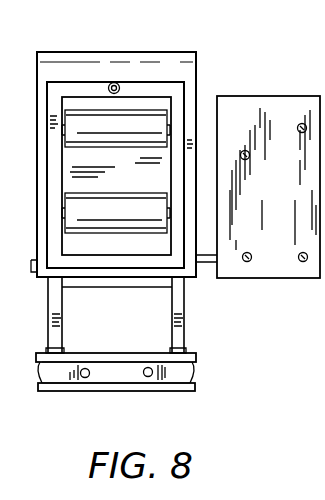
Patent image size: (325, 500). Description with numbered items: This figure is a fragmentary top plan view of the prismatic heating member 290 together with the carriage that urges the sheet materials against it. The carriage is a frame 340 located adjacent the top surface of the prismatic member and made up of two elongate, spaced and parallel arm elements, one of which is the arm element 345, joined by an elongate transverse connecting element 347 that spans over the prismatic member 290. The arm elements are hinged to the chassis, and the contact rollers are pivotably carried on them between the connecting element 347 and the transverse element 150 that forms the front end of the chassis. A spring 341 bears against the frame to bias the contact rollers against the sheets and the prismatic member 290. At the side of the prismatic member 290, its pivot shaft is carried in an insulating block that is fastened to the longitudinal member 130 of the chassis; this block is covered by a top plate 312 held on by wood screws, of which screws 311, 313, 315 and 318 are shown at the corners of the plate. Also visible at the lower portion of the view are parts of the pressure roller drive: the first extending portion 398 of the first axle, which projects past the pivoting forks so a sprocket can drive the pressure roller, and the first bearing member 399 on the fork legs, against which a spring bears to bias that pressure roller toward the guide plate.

The frame 340 is at (44, 320).
The spring 341 is at (109, 85).
The transverse connecting element 347 is at (143, 92).
The prismatic heating member 290 is at (60, 182).
The arm element 345 is at (47, 270).
The first extending portion 398 is at (52, 351).
The first bearing member 399 is at (181, 351).
The transverse element 150 is at (170, 388).
The top plate 312 is at (277, 279).
The wood screw 311 is at (245, 150).
The wood screw 313 is at (302, 123).
The wood screw 315 is at (247, 262).
The fastener 318 is at (303, 262).
The longitudinal member 130 is at (292, 493).